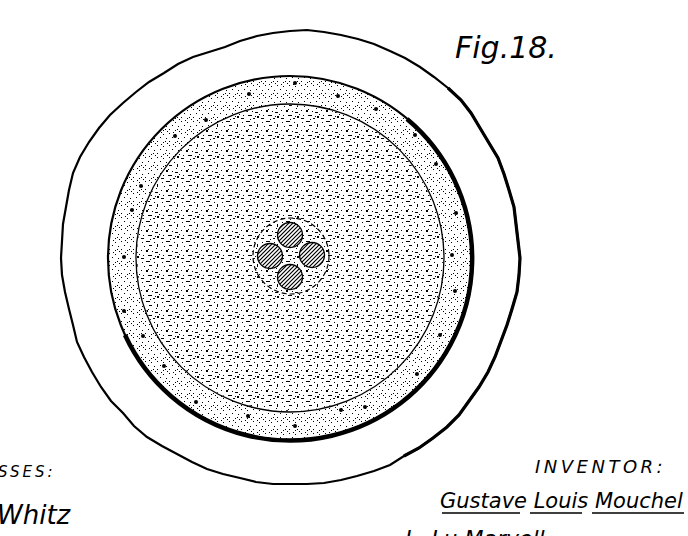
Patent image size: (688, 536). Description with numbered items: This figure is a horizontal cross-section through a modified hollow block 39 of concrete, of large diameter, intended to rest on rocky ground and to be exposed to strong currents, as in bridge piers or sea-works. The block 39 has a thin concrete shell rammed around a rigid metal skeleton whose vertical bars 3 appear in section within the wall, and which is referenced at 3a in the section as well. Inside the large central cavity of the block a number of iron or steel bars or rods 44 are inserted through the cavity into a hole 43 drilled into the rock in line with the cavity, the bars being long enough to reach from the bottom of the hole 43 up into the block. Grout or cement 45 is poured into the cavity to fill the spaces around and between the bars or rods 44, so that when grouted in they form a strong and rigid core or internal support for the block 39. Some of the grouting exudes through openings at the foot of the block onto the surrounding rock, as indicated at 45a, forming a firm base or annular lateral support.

The vertical bars 3 is at (130, 192).
The inner lining of tube 3a is at (460, 348).
The hollow block 39 is at (464, 274).
The hole 43 is at (257, 270).
The bars or rods 44 is at (280, 286).
The grout or cement 45 is at (328, 248).
The exuded grouting 45a is at (202, 271).